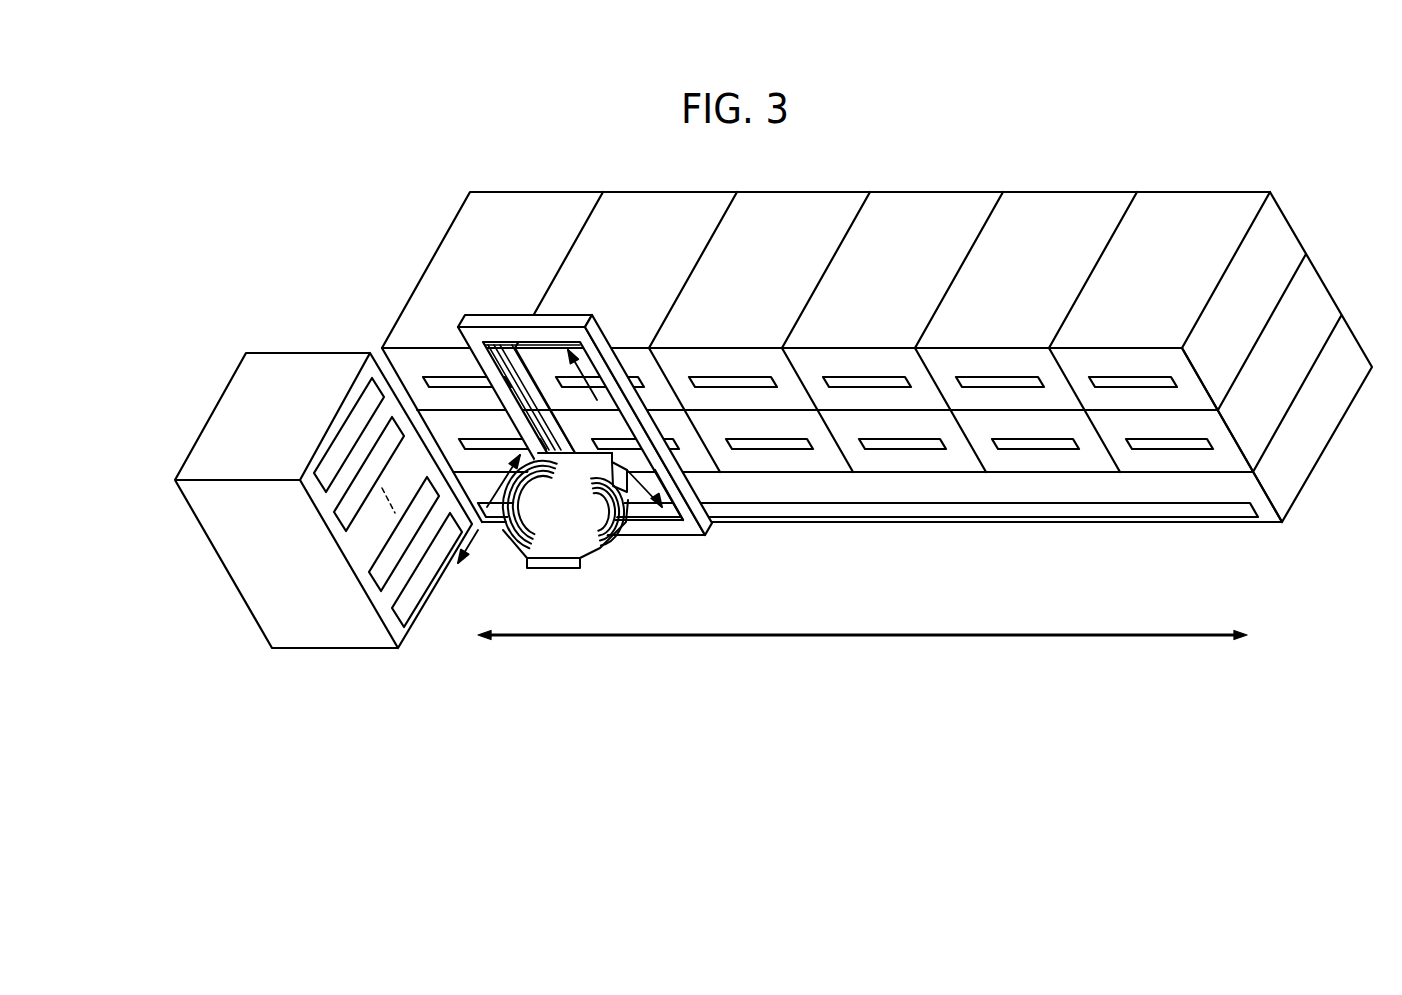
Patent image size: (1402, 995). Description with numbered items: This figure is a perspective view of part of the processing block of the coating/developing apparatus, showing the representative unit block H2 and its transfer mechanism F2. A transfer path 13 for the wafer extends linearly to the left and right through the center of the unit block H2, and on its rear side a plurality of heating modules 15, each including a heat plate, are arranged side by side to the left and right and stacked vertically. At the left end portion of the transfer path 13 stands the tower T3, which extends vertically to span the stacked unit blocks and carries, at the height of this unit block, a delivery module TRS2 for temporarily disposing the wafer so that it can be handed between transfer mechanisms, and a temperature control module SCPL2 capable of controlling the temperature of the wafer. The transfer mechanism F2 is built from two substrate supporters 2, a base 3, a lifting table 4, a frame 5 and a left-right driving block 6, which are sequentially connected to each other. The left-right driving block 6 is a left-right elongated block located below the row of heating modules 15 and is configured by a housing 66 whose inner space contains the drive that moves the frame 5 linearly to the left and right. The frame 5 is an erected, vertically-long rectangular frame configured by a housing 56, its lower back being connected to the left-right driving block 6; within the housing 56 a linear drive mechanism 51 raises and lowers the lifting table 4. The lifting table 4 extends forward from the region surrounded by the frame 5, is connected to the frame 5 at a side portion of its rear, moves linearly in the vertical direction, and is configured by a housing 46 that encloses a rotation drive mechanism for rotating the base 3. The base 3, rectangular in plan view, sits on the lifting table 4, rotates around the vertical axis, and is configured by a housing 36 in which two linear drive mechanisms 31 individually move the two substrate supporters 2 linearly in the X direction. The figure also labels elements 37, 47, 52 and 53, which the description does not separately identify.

The substrate supporter 2 is at (622, 547).
The base 3 is at (552, 553).
The linear drive mechanism 31 is at (566, 572).
The lifting table 4 is at (598, 563).
The frame 5 is at (517, 320).
The left-right driving block 6 is at (1322, 422).
The transfer path 13 is at (1240, 553).
The heating module 15 is at (525, 210).
The housing 36 is at (528, 565).
The coil portion 37 is at (573, 500).
The housing 46 is at (630, 537).
The guide groove 47 is at (665, 475).
The linear drive mechanism 51 is at (600, 370).
The guide rail 52 is at (487, 392).
The guide rail 53 is at (490, 357).
The housing 56 is at (558, 320).
The housing 66 is at (1308, 480).
The tower T3 is at (303, 368).
The delivery module TRS2 is at (343, 425).
The temperature control module SCPL2 is at (418, 602).
The transfer mechanism F2 is at (722, 565).
The unit block H2 is at (800, 672).